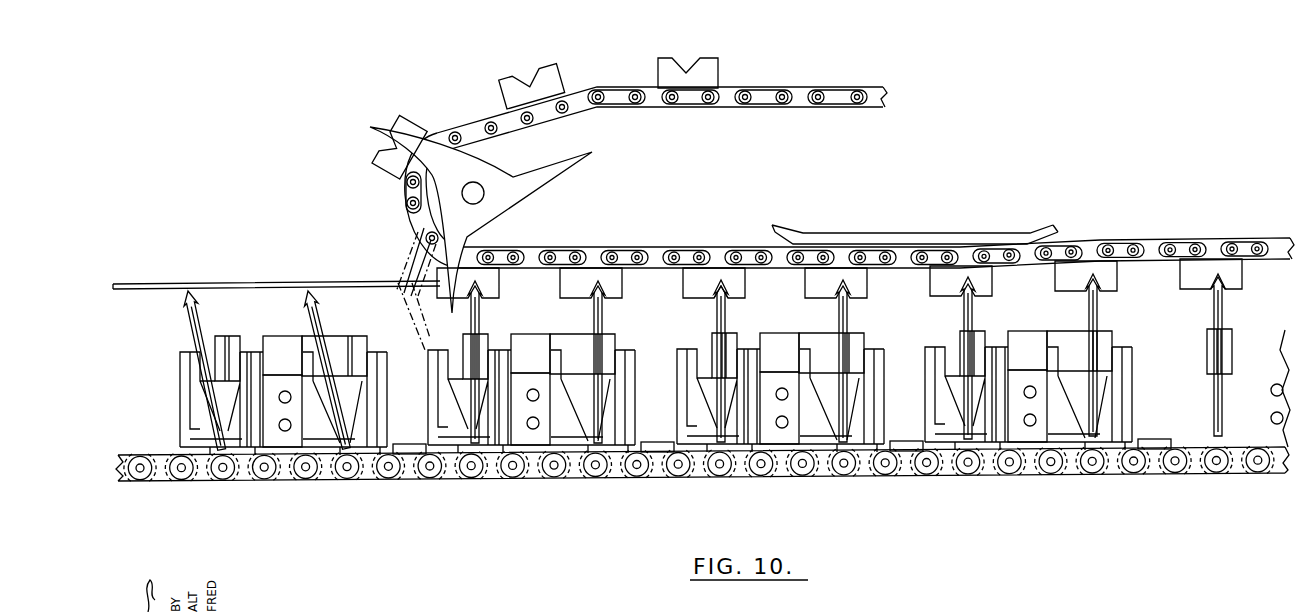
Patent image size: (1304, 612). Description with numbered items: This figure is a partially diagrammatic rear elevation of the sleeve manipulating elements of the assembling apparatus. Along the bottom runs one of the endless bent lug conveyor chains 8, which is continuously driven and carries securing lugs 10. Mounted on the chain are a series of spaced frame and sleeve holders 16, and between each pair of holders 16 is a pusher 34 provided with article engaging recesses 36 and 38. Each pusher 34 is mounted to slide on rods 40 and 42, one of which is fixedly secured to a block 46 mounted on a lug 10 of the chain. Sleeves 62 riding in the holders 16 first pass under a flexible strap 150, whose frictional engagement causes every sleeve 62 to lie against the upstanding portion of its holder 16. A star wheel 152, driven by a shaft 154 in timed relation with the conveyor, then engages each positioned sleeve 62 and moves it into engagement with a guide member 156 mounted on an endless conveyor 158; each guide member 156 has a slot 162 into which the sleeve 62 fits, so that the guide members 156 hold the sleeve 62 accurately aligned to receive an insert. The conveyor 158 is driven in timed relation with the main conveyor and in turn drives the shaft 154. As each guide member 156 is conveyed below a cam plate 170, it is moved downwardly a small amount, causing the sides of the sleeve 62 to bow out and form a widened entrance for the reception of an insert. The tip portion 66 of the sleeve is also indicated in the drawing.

The bent lug conveyor chain 8 is at (533, 473).
The securing lug 10 is at (458, 453).
The frame and sleeve holder 16 is at (172, 384).
The pusher 34 is at (284, 340).
The article engaging recess 36 is at (343, 339).
The article engaging recess 38 is at (228, 340).
The rod 40 is at (280, 402).
The rod 42 is at (290, 428).
The block 46 is at (287, 446).
The sleeve 62 is at (190, 328).
The finger tip 66 is at (848, 322).
The flexible strap 150 is at (300, 284).
The star wheel 152 is at (533, 188).
The shaft 154 is at (466, 195).
The guide member 156 is at (560, 80).
The endless conveyor 158 is at (829, 73).
The slot 162 is at (712, 291).
The cam plate 170 is at (950, 233).